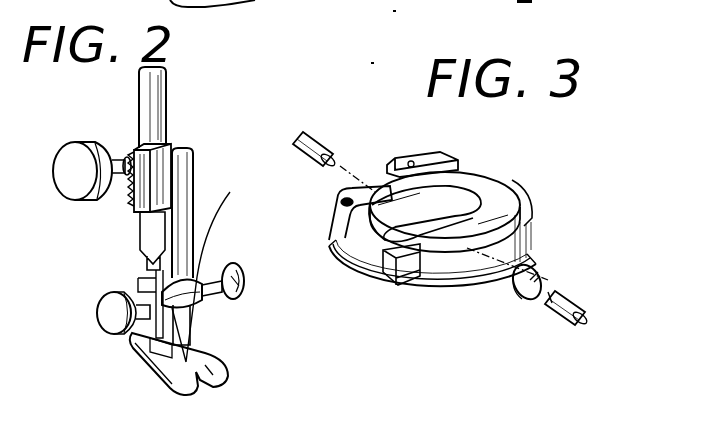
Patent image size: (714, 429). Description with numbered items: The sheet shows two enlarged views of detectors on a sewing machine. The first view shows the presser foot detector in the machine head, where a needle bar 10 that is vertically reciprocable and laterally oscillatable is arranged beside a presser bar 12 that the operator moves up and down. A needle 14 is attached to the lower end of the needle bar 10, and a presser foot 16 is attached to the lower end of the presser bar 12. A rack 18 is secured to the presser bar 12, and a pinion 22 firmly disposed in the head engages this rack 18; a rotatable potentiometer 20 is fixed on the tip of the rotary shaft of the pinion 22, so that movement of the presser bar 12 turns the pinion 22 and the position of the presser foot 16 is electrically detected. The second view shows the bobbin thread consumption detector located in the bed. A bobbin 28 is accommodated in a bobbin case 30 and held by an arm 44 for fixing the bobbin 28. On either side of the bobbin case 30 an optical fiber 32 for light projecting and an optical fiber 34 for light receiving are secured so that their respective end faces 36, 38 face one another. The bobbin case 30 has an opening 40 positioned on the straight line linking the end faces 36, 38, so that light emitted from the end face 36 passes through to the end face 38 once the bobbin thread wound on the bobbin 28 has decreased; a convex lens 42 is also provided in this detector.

In FIG. 2, the needle bar 10 is at (190, 174).
In FIG. 2, the presser bar 12 is at (148, 92).
In FIG. 2, the needle 14 is at (148, 350).
In FIG. 2, the presser foot 16 is at (215, 374).
In FIG. 2, the rack 18 is at (140, 198).
In FIG. 2, the rotatable potentiometer 20 is at (74, 187).
In FIG. 2, the pinion 22 is at (133, 150).
In FIG. 3, the bobbin 28 is at (492, 184).
In FIG. 3, the bobbin case 30 is at (366, 256).
In FIG. 3, the optical fiber for light projecting 32 is at (560, 319).
In FIG. 3, the optical fiber for light receiving 34 is at (323, 136).
In FIG. 3, the end face 36 is at (549, 292).
In FIG. 3, the end face 38 is at (331, 163).
In FIG. 3, the opening 40 is at (376, 172).
In FIG. 3, the convex lens 42 is at (515, 291).
In FIG. 3, the arm 44 is at (458, 195).